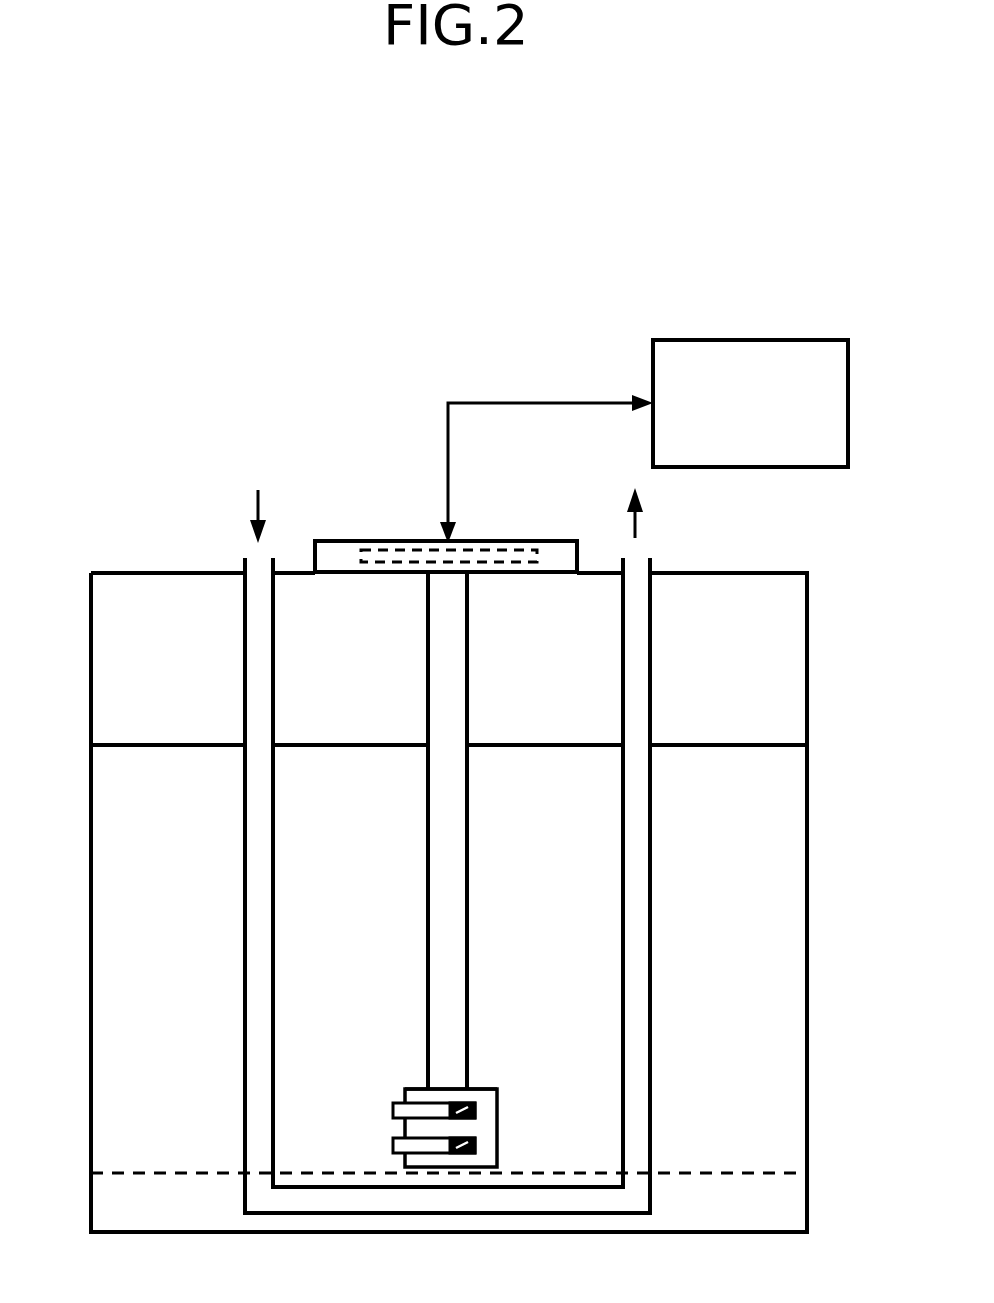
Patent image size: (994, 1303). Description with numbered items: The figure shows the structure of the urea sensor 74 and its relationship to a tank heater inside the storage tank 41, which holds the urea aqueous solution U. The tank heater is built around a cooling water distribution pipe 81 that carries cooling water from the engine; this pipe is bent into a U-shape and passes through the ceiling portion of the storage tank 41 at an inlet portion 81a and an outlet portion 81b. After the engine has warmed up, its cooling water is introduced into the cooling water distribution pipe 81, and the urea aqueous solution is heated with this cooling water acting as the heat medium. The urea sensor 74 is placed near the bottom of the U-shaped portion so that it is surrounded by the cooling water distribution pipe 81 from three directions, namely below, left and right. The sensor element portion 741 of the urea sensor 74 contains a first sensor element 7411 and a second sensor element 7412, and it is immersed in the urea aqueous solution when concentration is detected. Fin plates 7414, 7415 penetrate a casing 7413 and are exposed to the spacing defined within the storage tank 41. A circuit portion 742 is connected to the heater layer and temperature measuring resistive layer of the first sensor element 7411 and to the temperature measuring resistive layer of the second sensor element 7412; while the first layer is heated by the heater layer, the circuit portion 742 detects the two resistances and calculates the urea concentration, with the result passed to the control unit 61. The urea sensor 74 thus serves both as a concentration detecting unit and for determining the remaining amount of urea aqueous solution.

The storage tank 41 is at (808, 617).
The liquid (fluid) U is at (103, 832).
The cooling water distribution pipe 81 is at (650, 668).
The inlet portion 81a is at (245, 563).
The outlet portion 81b is at (650, 562).
The urea sensor 74 is at (428, 672).
The circuit portion 742 is at (520, 541).
The control unit (C/U) 61 is at (812, 340).
The sensor element portion 741 is at (478, 1088).
The casing 7413 is at (420, 1092).
The fin plate 7415 is at (393, 1111).
The second sensor element 7412 is at (478, 1110).
The fin plate 7414 is at (393, 1148).
The first sensor element 7411 is at (478, 1146).